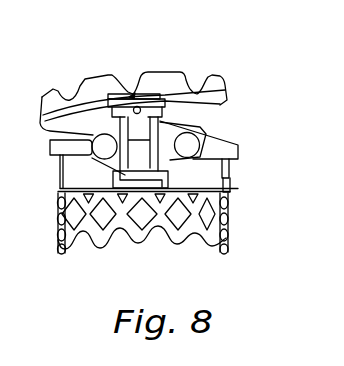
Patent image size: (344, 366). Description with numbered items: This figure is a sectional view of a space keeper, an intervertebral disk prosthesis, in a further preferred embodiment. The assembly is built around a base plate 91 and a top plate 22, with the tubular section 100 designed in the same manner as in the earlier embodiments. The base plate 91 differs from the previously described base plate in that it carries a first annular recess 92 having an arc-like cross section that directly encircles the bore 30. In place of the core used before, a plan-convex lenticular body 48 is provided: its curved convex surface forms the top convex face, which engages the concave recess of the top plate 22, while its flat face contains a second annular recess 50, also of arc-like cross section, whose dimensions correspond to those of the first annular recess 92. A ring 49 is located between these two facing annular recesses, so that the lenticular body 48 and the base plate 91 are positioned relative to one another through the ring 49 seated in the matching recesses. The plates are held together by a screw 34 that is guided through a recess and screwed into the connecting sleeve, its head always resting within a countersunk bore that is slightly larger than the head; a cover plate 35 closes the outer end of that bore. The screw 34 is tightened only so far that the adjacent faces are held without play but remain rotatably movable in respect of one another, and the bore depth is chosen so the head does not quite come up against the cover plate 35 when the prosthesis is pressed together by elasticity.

The second annular recess 50 is at (102, 134).
The cover plate 35 is at (133, 94).
The screw 34 is at (163, 104).
The top plate 22 is at (212, 104).
The plan-convex lenticular body 48 is at (200, 125).
The ring 49 is at (101, 147).
The bore 30 is at (123, 163).
The base plate 91 is at (212, 172).
The tubular section 100 is at (230, 223).
The first annular recess 92 is at (183, 186).